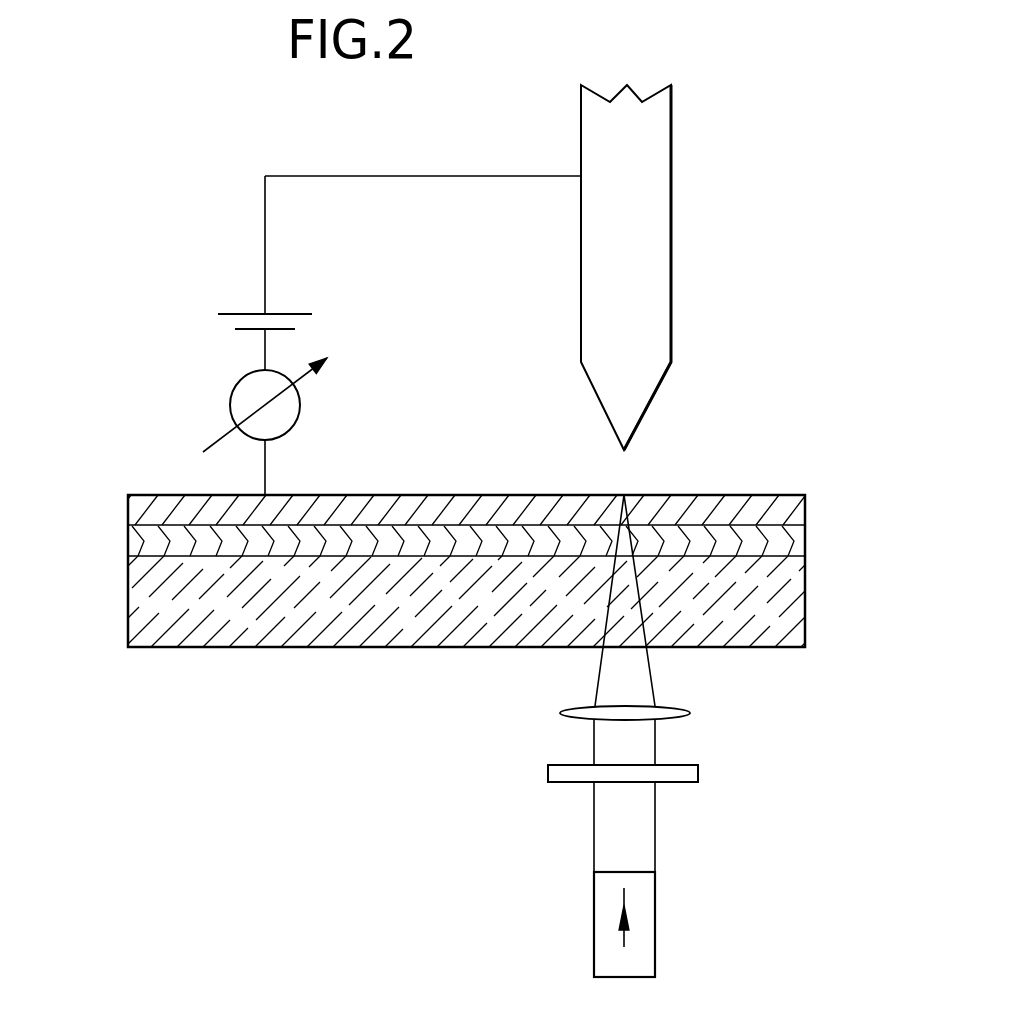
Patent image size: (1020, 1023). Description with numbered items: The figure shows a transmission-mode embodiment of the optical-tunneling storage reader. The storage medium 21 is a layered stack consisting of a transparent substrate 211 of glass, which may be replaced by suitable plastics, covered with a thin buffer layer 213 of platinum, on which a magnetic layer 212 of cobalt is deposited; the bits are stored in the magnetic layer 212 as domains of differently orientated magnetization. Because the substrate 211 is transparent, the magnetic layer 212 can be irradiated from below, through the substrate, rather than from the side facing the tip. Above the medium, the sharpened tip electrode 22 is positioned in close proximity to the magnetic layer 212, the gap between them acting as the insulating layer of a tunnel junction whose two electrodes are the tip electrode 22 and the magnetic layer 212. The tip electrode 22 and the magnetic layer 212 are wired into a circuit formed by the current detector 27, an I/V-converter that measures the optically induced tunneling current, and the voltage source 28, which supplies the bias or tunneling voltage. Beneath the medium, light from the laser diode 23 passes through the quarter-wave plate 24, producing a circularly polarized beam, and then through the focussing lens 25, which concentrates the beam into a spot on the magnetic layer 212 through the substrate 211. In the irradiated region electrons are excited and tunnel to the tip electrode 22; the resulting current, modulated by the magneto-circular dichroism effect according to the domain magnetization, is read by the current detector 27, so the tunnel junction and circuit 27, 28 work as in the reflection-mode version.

The storage medium 21 is at (113, 498).
The transparent substrate 211 is at (800, 628).
The magnetic layer 212 is at (703, 500).
The buffer layer 213 is at (803, 545).
The tip electrode 22 is at (680, 185).
The laser diode 23 is at (650, 949).
The quarter-wave plate 24 is at (678, 782).
The focussing lens 25 is at (668, 722).
The current detector 27 is at (228, 397).
The voltage source 28 is at (238, 312).